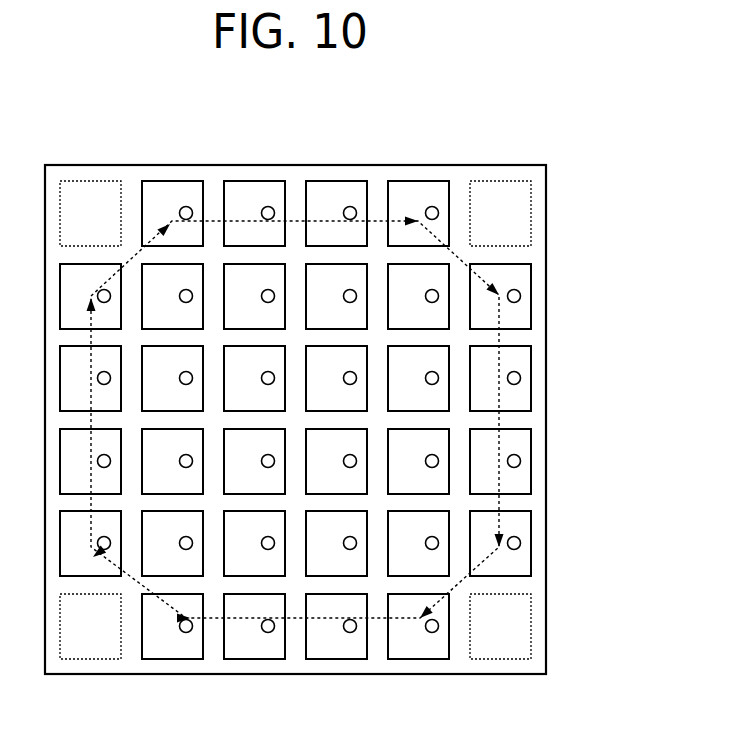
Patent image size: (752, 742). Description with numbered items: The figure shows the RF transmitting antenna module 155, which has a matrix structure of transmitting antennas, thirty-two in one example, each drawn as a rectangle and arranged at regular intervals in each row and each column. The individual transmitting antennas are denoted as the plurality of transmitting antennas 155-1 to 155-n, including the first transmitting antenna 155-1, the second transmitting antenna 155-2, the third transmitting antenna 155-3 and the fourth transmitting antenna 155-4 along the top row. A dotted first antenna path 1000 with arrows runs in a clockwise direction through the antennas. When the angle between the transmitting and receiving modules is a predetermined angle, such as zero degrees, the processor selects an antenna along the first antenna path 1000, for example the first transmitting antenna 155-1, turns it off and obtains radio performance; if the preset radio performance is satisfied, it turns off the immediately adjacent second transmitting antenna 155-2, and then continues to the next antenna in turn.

The RF transmitting antenna module 155 is at (292, 163).
The first transmitting antenna 155-1 is at (173, 188).
The second transmitting antenna 155-2 is at (253, 188).
The third transmitting antenna 155-3 is at (335, 188).
The fourth transmitting antenna 155-4 is at (417, 188).
The n-th transmitting antenna 155-n is at (417, 648).
The first antenna path 1000 is at (499, 418).